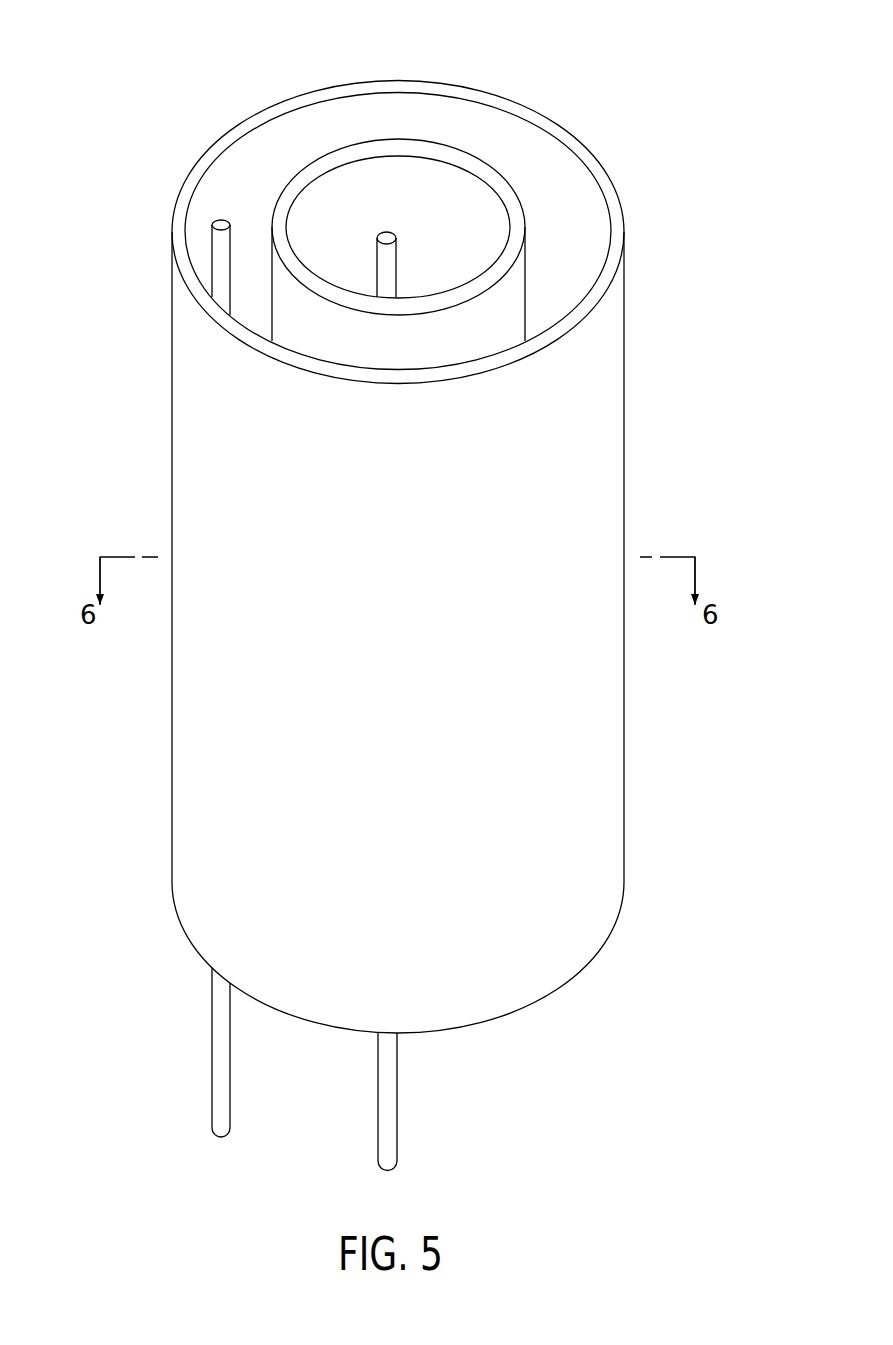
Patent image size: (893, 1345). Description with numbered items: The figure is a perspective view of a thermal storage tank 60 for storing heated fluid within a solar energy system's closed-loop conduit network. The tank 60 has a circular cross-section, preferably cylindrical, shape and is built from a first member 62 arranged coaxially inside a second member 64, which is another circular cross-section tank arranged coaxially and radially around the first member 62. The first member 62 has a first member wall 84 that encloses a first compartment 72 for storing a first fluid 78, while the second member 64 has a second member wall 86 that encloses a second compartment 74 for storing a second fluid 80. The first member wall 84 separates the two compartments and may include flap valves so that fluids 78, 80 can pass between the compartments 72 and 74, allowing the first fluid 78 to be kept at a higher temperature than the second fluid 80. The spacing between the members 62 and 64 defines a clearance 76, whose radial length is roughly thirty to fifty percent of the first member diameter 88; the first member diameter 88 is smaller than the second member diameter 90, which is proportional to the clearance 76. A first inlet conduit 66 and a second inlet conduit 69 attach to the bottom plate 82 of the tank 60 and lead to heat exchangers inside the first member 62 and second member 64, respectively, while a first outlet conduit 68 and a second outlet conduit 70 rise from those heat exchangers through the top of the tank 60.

The thermal storage tank 60 is at (619, 53).
The first member 62 is at (348, 150).
The second member 64 is at (255, 116).
The first inlet conduit 66 is at (388, 1135).
The first outlet conduit 68 is at (384, 236).
The second inlet conduit 69 is at (220, 1097).
The second outlet conduit 70 is at (221, 222).
The first compartment 72 is at (470, 197).
The second compartment 74 is at (575, 197).
The clearance 76 is at (482, 137).
The first fluid 78 is at (474, 243).
The second fluid 80 is at (545, 293).
The bottom plate 82 is at (538, 1003).
The first member wall 84 is at (302, 330).
The second member wall 86 is at (197, 405).
The first member diameter 88 is at (513, 253).
The second member diameter 90 is at (552, 333).